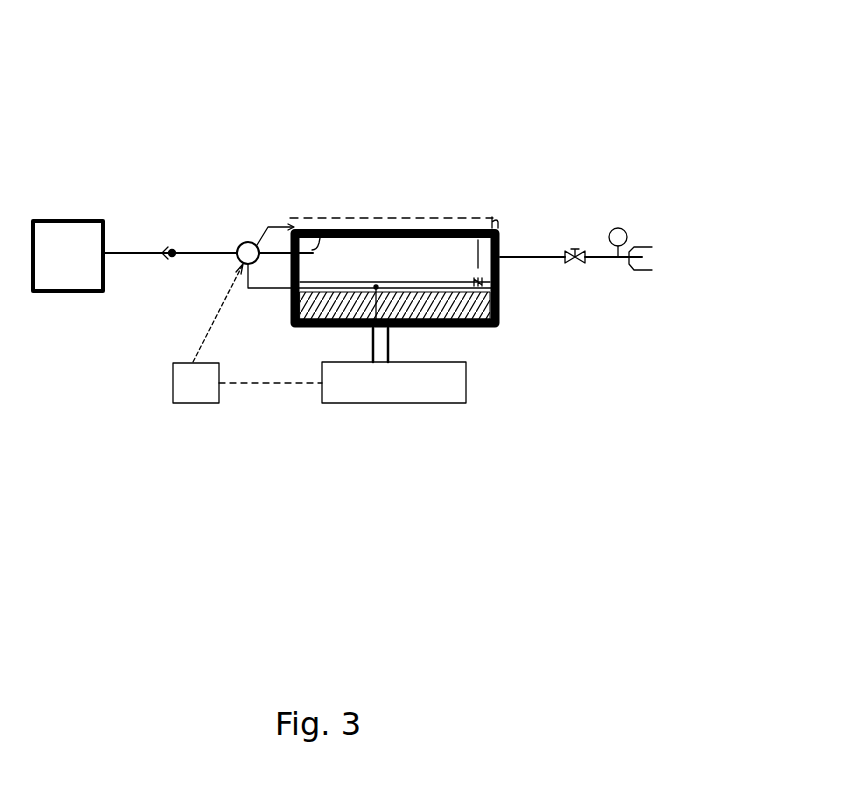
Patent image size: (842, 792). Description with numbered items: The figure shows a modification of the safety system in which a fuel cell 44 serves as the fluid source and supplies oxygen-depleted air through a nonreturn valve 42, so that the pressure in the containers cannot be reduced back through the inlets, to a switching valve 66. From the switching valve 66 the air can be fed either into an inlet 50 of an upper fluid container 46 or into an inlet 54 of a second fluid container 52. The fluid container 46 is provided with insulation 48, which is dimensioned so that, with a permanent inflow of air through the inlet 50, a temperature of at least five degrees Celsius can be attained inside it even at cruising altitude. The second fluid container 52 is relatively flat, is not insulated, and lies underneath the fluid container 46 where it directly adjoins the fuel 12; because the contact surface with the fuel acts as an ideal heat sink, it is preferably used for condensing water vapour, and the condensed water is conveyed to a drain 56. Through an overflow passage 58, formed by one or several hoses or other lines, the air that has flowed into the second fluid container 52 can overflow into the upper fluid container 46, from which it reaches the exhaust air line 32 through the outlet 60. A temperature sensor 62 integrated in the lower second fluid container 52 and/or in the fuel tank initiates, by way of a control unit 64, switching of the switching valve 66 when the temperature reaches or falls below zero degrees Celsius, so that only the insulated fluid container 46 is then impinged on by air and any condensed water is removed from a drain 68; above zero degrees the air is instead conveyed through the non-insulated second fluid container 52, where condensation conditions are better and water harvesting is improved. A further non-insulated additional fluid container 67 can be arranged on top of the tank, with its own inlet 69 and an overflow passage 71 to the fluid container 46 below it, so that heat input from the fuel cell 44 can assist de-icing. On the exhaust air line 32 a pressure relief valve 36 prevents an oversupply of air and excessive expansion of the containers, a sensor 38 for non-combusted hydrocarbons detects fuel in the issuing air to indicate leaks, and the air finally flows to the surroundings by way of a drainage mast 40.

The fuel 12 is at (478, 318).
The exhaust air line 32 is at (522, 257).
The pressure relief valve 36 is at (576, 242).
The sensor for non-combusted hydrocarbons 38 is at (630, 221).
The drainage mast 40 is at (678, 276).
The nonreturn valve 42 is at (170, 250).
The fuel cell 44 is at (43, 278).
The fluid container 46 is at (320, 238).
The insulation 48 is at (389, 230).
The inlet 50 is at (288, 226).
The second fluid container 52 is at (291, 328).
The inlet 54 is at (266, 290).
The drain 56 is at (495, 287).
The overflow passage 58 is at (472, 230).
The outlet 60 is at (498, 209).
The temperature sensor 62 is at (383, 395).
The control unit 64 is at (183, 398).
The switching valve 66 is at (248, 255).
The additional fluid container 67 is at (316, 229).
The drain 68 is at (500, 275).
The inlet 69 is at (290, 226).
The overflow passage 71 is at (478, 230).